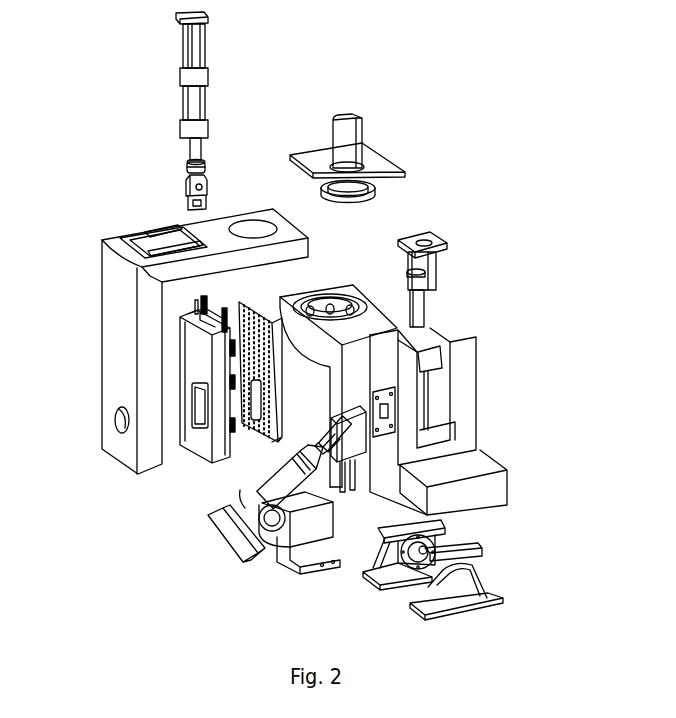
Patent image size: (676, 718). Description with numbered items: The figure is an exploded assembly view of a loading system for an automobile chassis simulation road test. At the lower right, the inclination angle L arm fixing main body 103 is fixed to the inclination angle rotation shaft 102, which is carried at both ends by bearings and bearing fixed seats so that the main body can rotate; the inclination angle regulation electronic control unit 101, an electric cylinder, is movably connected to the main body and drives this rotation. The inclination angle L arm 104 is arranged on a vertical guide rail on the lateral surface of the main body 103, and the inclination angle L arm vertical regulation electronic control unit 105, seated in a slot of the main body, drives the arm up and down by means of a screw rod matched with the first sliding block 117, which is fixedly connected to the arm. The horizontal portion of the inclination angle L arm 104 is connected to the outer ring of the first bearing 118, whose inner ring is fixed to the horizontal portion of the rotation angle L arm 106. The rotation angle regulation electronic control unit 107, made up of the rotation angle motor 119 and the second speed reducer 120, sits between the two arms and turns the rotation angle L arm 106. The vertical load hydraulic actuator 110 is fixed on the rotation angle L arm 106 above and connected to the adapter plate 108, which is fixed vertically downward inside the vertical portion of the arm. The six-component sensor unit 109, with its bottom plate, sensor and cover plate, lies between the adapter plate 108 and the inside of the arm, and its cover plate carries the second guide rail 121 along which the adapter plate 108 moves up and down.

The inclination angle regulation electronic control unit 101 is at (222, 525).
The inclination angle rotation shaft 102 is at (392, 538).
The inclination angle L arm fixing main body 103 is at (453, 456).
The inclination angle L arm 104 is at (372, 322).
The inclination angle L arm vertical regulation electronic control unit 105 is at (437, 279).
The rotation angle L arm 106 is at (155, 443).
The rotation angle regulation electronic control unit 107 is at (362, 170).
The adapter plate 108 is at (207, 318).
The six-component sensor unit 109 is at (197, 373).
The vertical load hydraulic actuator 110 is at (198, 133).
The first sliding block 117 is at (430, 345).
The first bearing 118 is at (338, 293).
The rotation angle motor 119 is at (345, 128).
The second speed reducer 120 is at (377, 192).
The second guide rail 121 is at (196, 295).